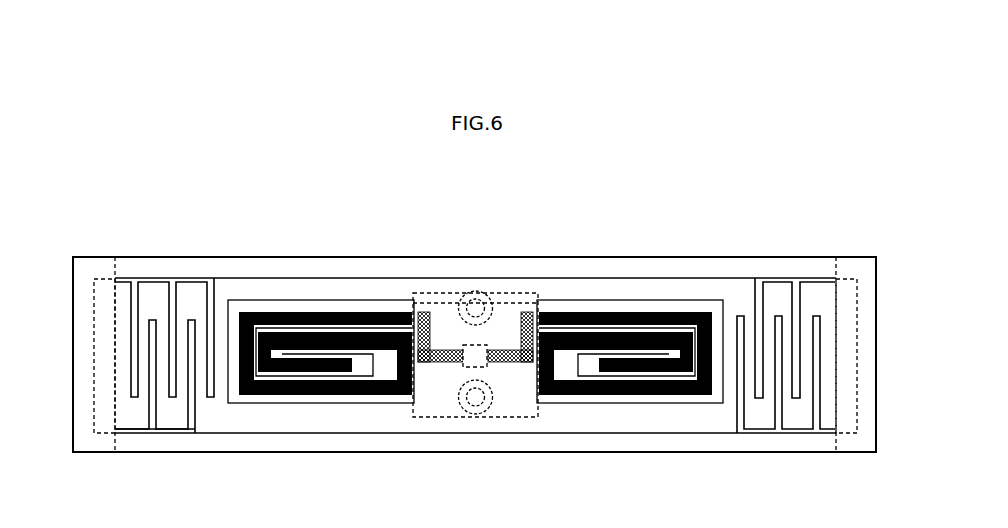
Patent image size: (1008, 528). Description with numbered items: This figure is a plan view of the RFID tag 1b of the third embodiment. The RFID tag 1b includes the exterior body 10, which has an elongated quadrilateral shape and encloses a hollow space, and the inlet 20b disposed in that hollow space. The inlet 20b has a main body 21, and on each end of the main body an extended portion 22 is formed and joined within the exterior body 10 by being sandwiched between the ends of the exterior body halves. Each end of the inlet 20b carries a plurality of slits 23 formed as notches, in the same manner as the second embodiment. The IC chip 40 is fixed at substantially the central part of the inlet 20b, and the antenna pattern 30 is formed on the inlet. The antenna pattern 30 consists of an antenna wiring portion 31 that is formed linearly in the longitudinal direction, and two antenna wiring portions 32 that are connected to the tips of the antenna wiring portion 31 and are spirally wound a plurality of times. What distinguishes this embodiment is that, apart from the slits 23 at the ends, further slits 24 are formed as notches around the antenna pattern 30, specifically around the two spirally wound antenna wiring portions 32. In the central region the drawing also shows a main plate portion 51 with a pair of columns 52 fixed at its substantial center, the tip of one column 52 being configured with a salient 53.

The exterior body 10 is at (95, 266).
The RFID tag 1b is at (668, 253).
The inlet 20b is at (262, 271).
The main body 21 is at (208, 430).
The extended portion 22 is at (103, 425).
The slits 23 is at (208, 308).
The slits 24 is at (337, 300).
The antenna pattern 30 is at (292, 404).
The antenna wiring portion 31 is at (433, 312).
The antenna wiring portions 32 is at (300, 312).
The IC chip 40 is at (455, 370).
The main plate portion 51 is at (447, 348).
The columns 52 is at (493, 303).
The salient 53 is at (477, 291).